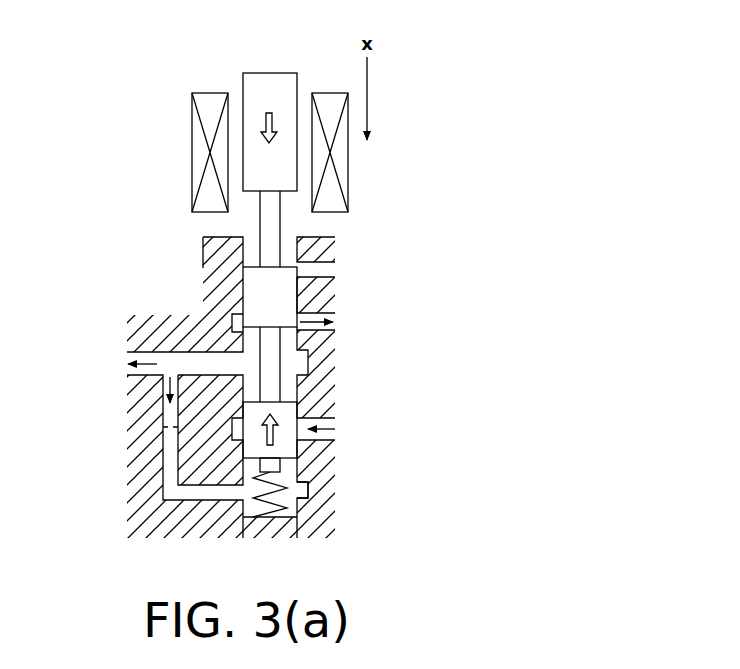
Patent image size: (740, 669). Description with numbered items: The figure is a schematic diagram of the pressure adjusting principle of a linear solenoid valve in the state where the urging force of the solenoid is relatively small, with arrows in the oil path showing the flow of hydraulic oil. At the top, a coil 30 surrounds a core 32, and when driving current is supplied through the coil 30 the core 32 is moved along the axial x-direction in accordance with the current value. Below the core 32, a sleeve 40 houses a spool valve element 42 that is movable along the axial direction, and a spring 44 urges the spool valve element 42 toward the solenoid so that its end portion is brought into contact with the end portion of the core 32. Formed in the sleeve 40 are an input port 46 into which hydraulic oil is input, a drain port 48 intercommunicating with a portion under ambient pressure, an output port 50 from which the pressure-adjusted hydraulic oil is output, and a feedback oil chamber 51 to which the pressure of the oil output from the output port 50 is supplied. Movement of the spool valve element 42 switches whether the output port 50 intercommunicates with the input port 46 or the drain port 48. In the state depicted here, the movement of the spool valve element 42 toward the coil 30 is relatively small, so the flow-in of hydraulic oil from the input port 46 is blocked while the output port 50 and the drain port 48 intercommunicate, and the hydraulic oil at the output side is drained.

The coil 30 is at (198, 153).
The core 32 is at (283, 80).
The sleeve 40 is at (330, 512).
The spool valve element 42 is at (243, 293).
The spring 44 is at (273, 520).
The input port 46 is at (335, 421).
The drain port 48 is at (336, 318).
The output port 50 is at (130, 358).
The feedback oil chamber 51 is at (312, 491).